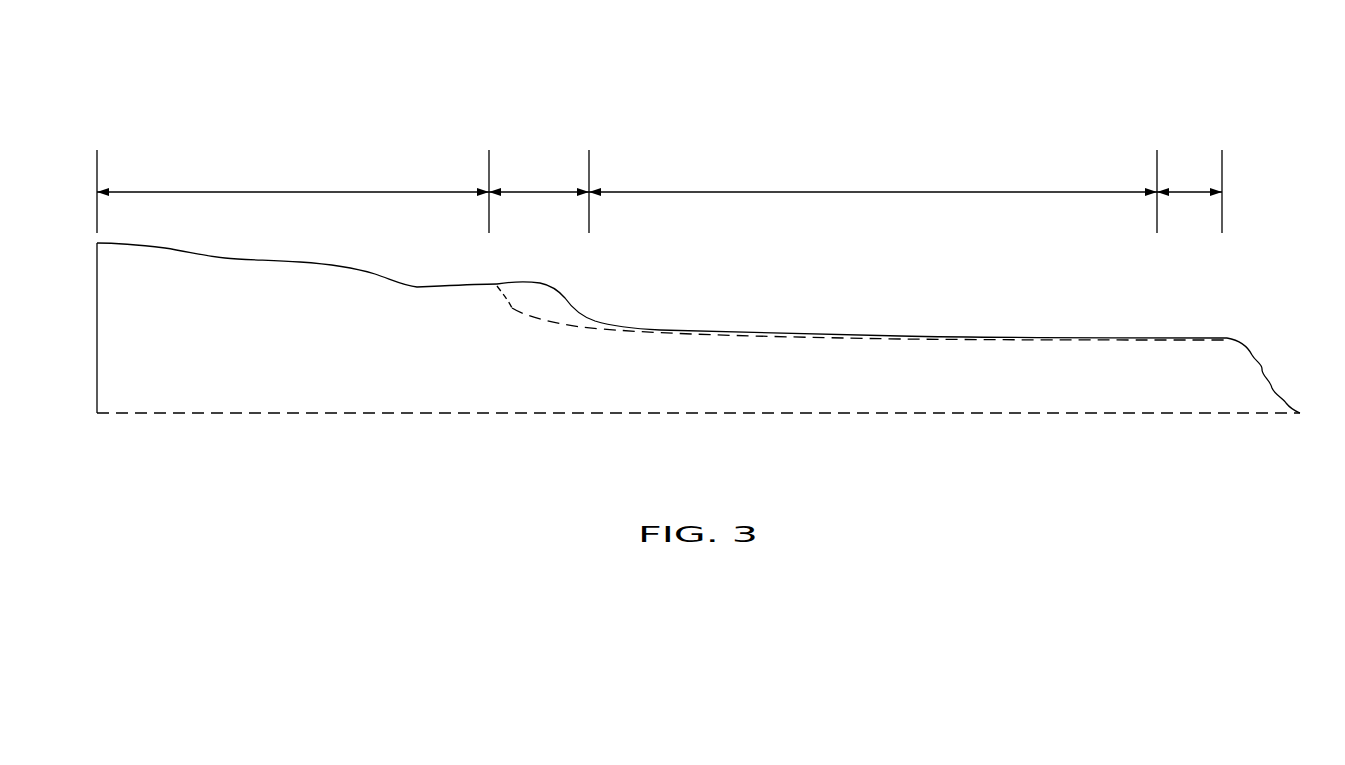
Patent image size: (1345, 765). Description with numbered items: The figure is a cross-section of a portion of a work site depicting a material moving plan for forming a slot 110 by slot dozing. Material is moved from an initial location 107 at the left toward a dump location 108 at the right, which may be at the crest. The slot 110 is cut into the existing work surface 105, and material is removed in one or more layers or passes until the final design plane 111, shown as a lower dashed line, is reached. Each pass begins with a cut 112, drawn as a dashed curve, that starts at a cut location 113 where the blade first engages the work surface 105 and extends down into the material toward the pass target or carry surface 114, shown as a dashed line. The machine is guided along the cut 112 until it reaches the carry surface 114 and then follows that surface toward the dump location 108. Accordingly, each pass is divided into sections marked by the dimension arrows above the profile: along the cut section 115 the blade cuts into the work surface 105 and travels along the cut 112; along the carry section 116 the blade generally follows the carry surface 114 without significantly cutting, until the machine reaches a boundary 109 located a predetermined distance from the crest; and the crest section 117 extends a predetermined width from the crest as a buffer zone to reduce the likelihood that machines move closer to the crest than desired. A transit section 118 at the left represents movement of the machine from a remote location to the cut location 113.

The work surface 105 is at (262, 258).
The initial location 107 is at (93, 240).
The dump location 108 is at (1267, 338).
The boundary 109 is at (1230, 338).
The slot 110 is at (692, 278).
The final design plane 111 is at (355, 413).
The cut 112 is at (510, 307).
The cut location 113 is at (498, 283).
The carry surface 114 is at (915, 342).
The cut section 115 is at (528, 192).
The carry section 116 is at (790, 192).
The crest section 117 is at (1185, 192).
The transit section 118 is at (230, 192).